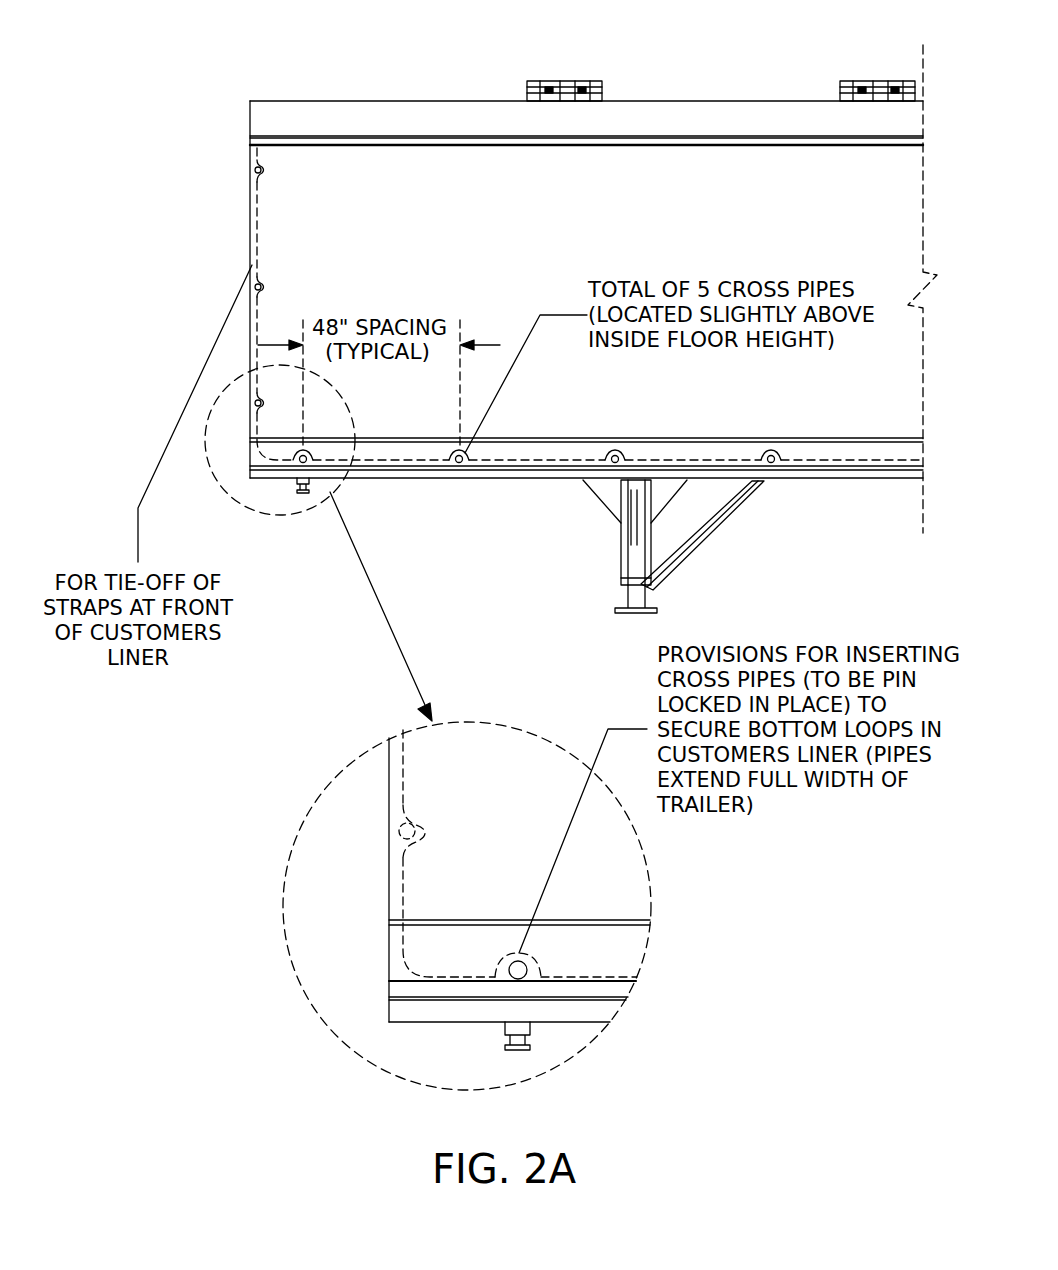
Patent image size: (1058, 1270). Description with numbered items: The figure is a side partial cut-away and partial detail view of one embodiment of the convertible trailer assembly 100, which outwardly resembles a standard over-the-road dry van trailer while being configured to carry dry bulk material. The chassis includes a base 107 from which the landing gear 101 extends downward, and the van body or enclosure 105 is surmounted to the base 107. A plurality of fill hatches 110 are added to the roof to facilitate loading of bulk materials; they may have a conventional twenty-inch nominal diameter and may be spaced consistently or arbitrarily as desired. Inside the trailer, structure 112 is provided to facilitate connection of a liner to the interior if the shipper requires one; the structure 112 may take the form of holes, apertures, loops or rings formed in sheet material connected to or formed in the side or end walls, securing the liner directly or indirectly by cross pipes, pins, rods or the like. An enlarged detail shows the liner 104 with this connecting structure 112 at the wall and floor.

The convertible trailer assembly 100 is at (222, 47).
The landing gear 101 is at (604, 545).
The liner 104 is at (252, 240).
The van body 105 is at (236, 170).
The base 107 is at (462, 495).
The fill hatches 110 is at (563, 80).
The structure 112 is at (280, 287).